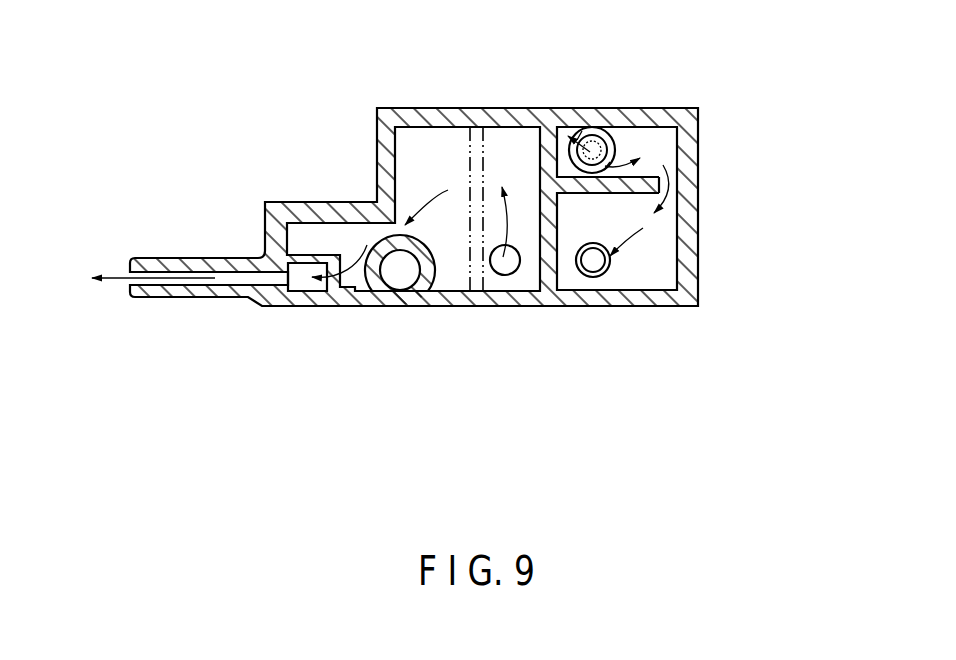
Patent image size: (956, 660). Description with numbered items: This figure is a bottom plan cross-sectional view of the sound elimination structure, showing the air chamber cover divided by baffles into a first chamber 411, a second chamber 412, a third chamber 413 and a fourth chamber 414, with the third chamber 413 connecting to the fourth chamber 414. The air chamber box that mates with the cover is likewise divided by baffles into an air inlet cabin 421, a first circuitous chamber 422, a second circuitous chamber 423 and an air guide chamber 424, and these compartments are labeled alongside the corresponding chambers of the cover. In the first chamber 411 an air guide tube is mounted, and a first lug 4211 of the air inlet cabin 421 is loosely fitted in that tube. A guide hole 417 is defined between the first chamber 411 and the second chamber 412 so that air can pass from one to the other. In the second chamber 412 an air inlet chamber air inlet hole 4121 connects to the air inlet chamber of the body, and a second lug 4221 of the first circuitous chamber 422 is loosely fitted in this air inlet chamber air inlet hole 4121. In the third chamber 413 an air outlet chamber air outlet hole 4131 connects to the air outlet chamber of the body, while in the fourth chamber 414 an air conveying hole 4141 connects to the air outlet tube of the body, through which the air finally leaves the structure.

The fourth chamber 414 is at (383, 163).
The air guide chamber 424 is at (420, 133).
The third chamber 413 is at (541, 158).
The second circuitous chamber 423 is at (503, 133).
The first chamber 411 is at (686, 101).
The air inlet cabin 421 is at (652, 133).
The second chamber 412 is at (666, 283).
The first circuitous chamber 422 is at (640, 273).
The first lug 4211 is at (592, 147).
The guide hole 417 is at (670, 184).
The air inlet chamber air inlet hole 4121 is at (583, 278).
The second lug 4221 is at (595, 277).
The air outlet chamber air outlet hole 4131 is at (503, 278).
The air conveying hole 4141 is at (357, 292).